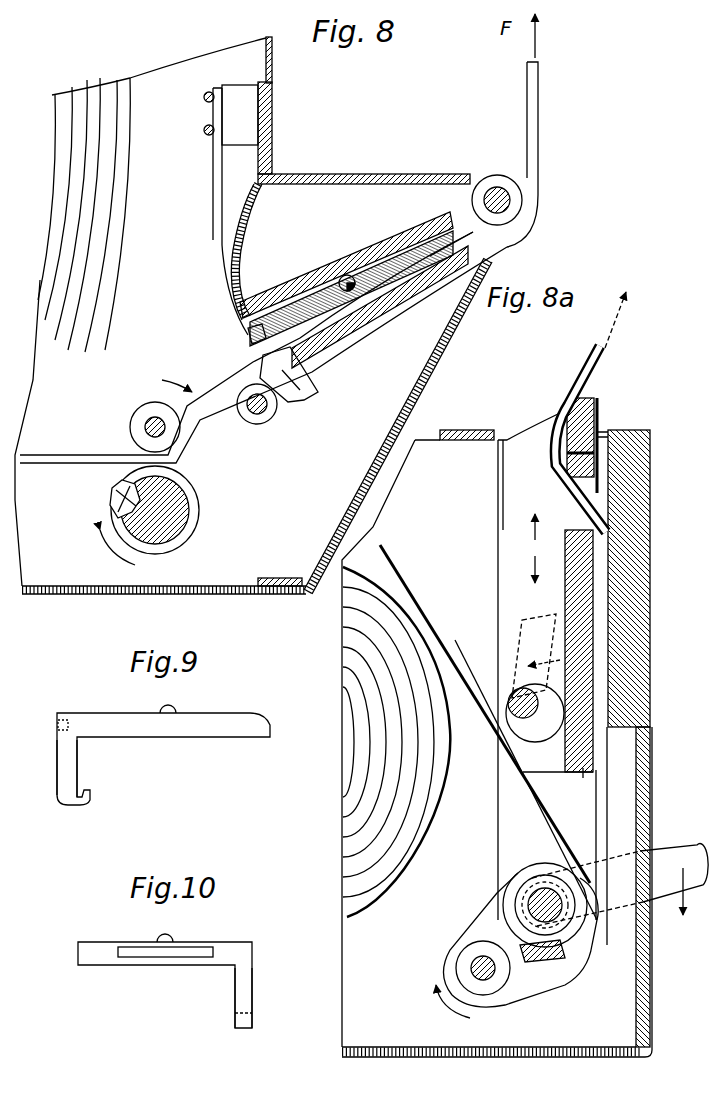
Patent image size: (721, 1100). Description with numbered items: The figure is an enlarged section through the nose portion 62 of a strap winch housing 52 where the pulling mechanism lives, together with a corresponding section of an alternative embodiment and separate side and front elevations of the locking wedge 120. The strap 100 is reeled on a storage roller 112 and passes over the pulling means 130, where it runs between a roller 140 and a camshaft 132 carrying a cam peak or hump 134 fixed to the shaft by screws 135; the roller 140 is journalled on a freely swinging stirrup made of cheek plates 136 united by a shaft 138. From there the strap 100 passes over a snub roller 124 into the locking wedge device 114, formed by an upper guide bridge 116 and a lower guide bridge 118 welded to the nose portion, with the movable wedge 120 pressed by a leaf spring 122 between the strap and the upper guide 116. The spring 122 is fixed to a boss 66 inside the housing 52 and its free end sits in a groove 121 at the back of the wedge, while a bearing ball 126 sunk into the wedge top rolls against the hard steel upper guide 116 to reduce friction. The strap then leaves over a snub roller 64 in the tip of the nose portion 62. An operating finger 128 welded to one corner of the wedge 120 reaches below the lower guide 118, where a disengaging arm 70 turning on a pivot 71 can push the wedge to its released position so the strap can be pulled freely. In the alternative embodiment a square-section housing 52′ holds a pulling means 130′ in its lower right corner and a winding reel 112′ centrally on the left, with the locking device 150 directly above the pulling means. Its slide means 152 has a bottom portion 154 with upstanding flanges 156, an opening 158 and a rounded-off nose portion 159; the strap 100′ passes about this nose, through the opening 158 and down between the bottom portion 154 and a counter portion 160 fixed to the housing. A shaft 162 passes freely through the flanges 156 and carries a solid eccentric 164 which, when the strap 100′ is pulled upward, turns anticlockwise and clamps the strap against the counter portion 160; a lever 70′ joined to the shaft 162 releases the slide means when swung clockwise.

In FIG. 8, the housing 52 is at (272, 62).
In FIG. 8A, the housing 52′ is at (450, 430).
In FIG. 8, the nose portion 62 is at (323, 493).
In FIG. 8, the snub roller 64 is at (497, 190).
In FIG. 8, the boss 66 is at (238, 95).
In FIG. 8, the disengaging arm 70 is at (386, 326).
In FIG. 8A, the lever 70′ is at (513, 640).
In FIG. 8, the pivot 71 is at (332, 384).
In FIG. 8, the strap 100 is at (527, 90).
In FIG. 8A, the strap 100′ is at (580, 380).
In FIG. 8, the storage roller 112 is at (126, 92).
In FIG. 8A, the winding reel 112′ is at (403, 560).
In FIG. 8, the locking wedge device 114 is at (312, 242).
In FIG. 8, the upper guide bridge 116 is at (441, 222).
In FIG. 8, the lower guide bridge 118 is at (406, 302).
In FIG. 8, the locking wedge 120 is at (388, 240).
In FIG. 9, the locking wedge 120 is at (226, 711).
In FIG. 10, the locking wedge 120 is at (238, 940).
In FIG. 8, the groove 121 is at (250, 340).
In FIG. 10, the groove 121 is at (144, 955).
In FIG. 8, the spring 122 is at (222, 258).
In FIG. 8, the snub roller 124 is at (262, 424).
In FIG. 8, the bearing ball 126 is at (340, 277).
In FIG. 9, the bearing ball 126 is at (170, 710).
In FIG. 10, the bearing ball 126 is at (167, 938).
In FIG. 8, the operating finger 128 is at (305, 398).
In FIG. 9, the operating finger 128 is at (77, 770).
In FIG. 10, the operating finger 128 is at (233, 1010).
In FIG. 8, the pulling means 130 is at (153, 366).
In FIG. 8A, the pulling means 130′ is at (490, 896).
In FIG. 8, the camshaft 132 is at (188, 508).
In FIG. 8, the cam peak or hump 134 is at (124, 506).
In FIG. 8, the screws 135 is at (124, 494).
In FIG. 8, the cheek plates 136 is at (182, 470).
In FIG. 8, the shaft 138 is at (145, 427).
In FIG. 8, the roller 140 is at (152, 402).
In FIG. 8A, the locking device 150 is at (494, 503).
In FIG. 8A, the slide means or carriage 152 is at (542, 418).
In FIG. 8A, the bottom portion 154 is at (583, 775).
In FIG. 8A, the flanges 156 is at (497, 587).
In FIG. 8A, the opening 158 is at (575, 510).
In FIG. 8A, the rounded-off nose portion 159 is at (598, 410).
In FIG. 8A, the counter or supporting portion 160 is at (640, 485).
In FIG. 8A, the shaft 162 is at (517, 710).
In FIG. 8A, the eccentric 164 is at (527, 728).